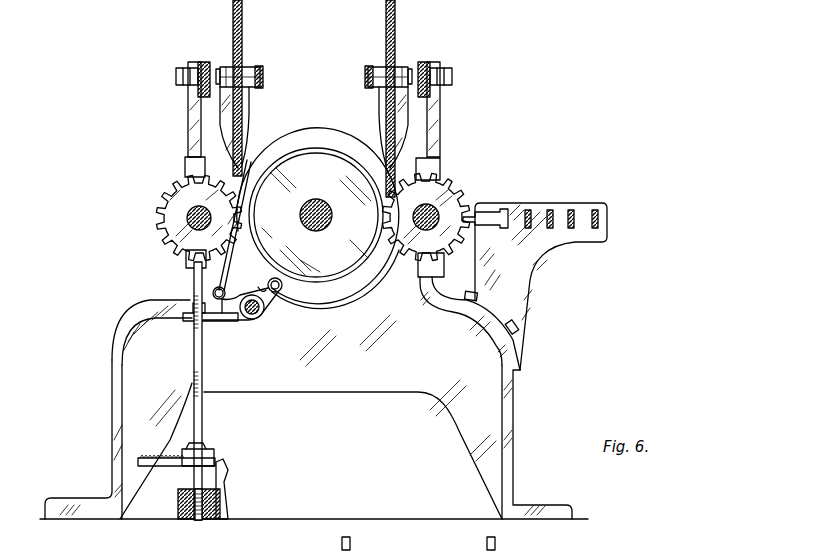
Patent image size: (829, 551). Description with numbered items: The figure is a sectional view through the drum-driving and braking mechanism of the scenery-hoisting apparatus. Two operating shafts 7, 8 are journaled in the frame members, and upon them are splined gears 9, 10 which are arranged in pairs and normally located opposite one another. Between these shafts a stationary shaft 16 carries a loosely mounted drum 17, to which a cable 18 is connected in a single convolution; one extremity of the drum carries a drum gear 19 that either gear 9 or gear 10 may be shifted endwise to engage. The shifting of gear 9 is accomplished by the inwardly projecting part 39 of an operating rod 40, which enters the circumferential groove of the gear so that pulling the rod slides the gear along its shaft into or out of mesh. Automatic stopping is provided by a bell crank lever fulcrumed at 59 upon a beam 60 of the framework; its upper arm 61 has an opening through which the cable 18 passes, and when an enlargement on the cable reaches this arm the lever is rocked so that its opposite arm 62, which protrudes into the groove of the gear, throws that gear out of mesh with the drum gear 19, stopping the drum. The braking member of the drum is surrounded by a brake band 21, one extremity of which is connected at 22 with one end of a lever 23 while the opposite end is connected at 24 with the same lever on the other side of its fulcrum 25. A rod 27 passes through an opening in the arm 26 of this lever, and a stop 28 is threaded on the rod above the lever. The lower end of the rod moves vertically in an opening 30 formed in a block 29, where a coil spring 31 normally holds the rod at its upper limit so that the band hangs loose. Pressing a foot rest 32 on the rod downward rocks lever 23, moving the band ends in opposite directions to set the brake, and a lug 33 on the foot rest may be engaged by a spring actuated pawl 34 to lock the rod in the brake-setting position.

The operating shaft 7 is at (444, 205).
The operating shaft 8 is at (172, 216).
The gear 9 is at (176, 198).
The gear 10 is at (426, 217).
The stationary shaft 16 is at (330, 226).
The drum 17 is at (346, 313).
The cable 18 is at (374, 275).
The drum gear 19 is at (454, 543).
The brake band 21 is at (340, 283).
The brake band extremity 22 is at (282, 293).
The lever 23 is at (256, 320).
The brake band connection 24 is at (220, 300).
The fulcrum 25 is at (254, 290).
The arm 26 is at (160, 323).
The rod 27 is at (194, 374).
The stop 28 is at (190, 303).
The block 29 is at (178, 512).
The opening 30 is at (178, 508).
The coil spring 31 is at (198, 522).
The foot rest 32 is at (200, 452).
The lug or projection 33 is at (215, 458).
The spring actuated detent or pawl 34 is at (228, 470).
The inwardly projecting part 39 is at (498, 210).
The operating rod 40 is at (571, 208).
The fulcrum 59 is at (264, 76).
The beam 60 is at (203, 62).
The upper arm 61 is at (246, 67).
The arm 62 is at (250, 107).